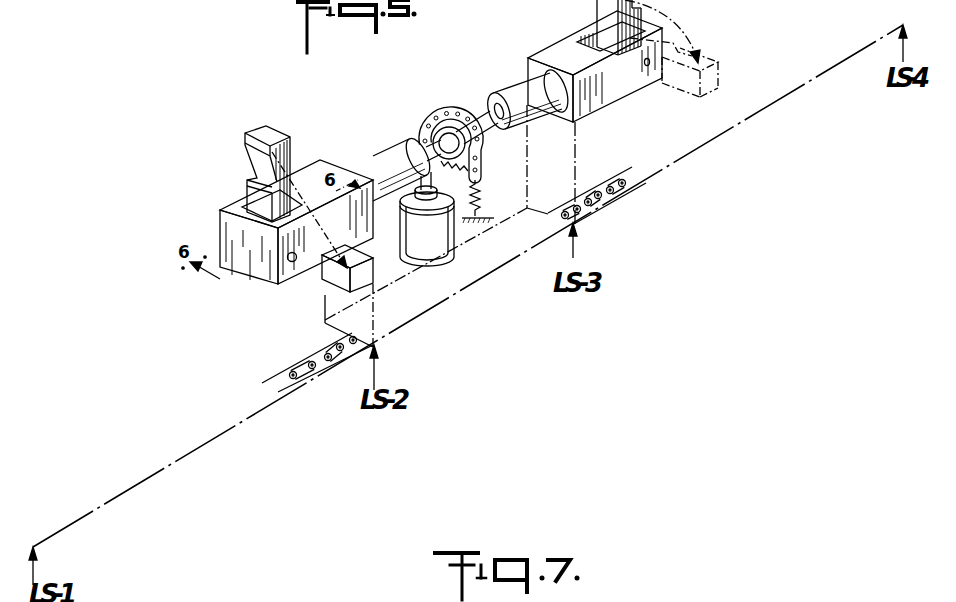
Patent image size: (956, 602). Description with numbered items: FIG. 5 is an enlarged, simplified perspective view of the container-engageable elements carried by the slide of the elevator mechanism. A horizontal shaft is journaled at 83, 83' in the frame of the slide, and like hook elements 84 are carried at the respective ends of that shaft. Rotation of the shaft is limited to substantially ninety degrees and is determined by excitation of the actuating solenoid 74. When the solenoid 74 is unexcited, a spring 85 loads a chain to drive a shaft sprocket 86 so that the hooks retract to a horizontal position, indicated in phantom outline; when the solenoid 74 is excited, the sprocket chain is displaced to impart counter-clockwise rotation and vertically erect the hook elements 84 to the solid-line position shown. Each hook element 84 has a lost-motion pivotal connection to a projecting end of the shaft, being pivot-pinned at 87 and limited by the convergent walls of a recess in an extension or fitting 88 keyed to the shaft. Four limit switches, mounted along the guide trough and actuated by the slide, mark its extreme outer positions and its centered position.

The actuating solenoid 74 is at (436, 256).
The shaft journal 83 is at (428, 149).
The shaft journal 83' is at (526, 80).
The hook element 84 is at (268, 135).
The spring 85 is at (482, 195).
The shaft sprocket 86 is at (440, 120).
The pivot pin 87 is at (292, 262).
The extension or fitting 88 is at (232, 210).